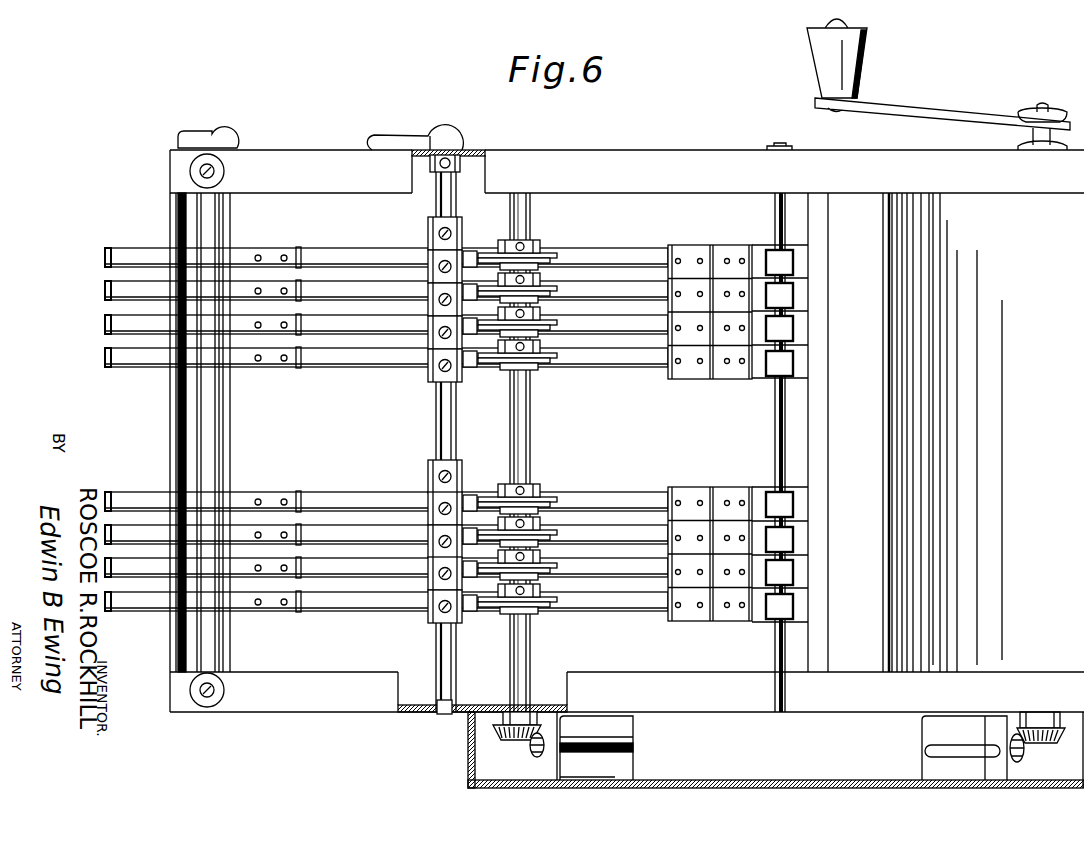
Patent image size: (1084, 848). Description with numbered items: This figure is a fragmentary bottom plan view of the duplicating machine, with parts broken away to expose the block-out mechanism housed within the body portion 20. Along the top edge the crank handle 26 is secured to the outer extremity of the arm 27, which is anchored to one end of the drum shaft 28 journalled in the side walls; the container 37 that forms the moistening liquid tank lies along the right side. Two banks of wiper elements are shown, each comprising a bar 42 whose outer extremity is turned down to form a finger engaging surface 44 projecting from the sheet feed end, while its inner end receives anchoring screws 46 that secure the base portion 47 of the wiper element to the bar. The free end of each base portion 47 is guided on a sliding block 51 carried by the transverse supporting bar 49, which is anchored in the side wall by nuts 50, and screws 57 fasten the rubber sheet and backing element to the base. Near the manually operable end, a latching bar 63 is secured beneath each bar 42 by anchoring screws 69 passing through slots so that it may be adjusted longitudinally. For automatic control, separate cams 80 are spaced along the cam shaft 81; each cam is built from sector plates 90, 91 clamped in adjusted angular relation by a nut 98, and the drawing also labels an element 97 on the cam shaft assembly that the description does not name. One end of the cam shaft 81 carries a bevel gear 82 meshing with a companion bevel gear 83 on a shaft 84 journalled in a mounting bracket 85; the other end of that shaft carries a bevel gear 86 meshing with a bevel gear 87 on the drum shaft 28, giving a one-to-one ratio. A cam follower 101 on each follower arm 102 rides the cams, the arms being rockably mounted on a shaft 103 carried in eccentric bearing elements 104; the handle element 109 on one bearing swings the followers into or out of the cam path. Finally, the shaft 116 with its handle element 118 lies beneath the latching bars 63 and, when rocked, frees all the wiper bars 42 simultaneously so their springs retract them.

The body portion 20 is at (681, 148).
The crank handle 26 is at (822, 52).
The arm 27 is at (966, 118).
The drum shaft 28 is at (1046, 108).
The container 37 is at (818, 430).
The bar 42 is at (372, 290).
The finger engaging surface 44 is at (105, 290).
The anchoring screws 46 is at (700, 256).
The base portion 47 is at (798, 300).
The supporting bar 49 is at (775, 425).
The nuts 50 is at (785, 147).
The sliding block 51 is at (780, 258).
The screws 57 is at (742, 256).
The bar 63 is at (298, 283).
The anchoring screws 69 is at (284, 256).
The cams 80 is at (562, 270).
The cam shaft 81 is at (528, 420).
The bevel gear 82 is at (497, 742).
The bevel gear 83 is at (532, 756).
The shaft 84 is at (632, 752).
The mounting bracket 85 is at (555, 730).
The bevel gear 86 is at (1017, 762).
The bevel gear 87 is at (1052, 743).
The plate 90 is at (557, 262).
The plate 91 is at (540, 256).
The shaft core 97 is at (527, 385).
The nut 98 is at (522, 244).
The cam follower 101 is at (468, 256).
The follower arm 102 is at (432, 273).
The shaft 103 is at (437, 422).
The eccentric bearing elements 104 is at (452, 152).
The handle element 109 is at (420, 137).
The shaft 116 is at (222, 426).
The handle element 118 is at (212, 136).